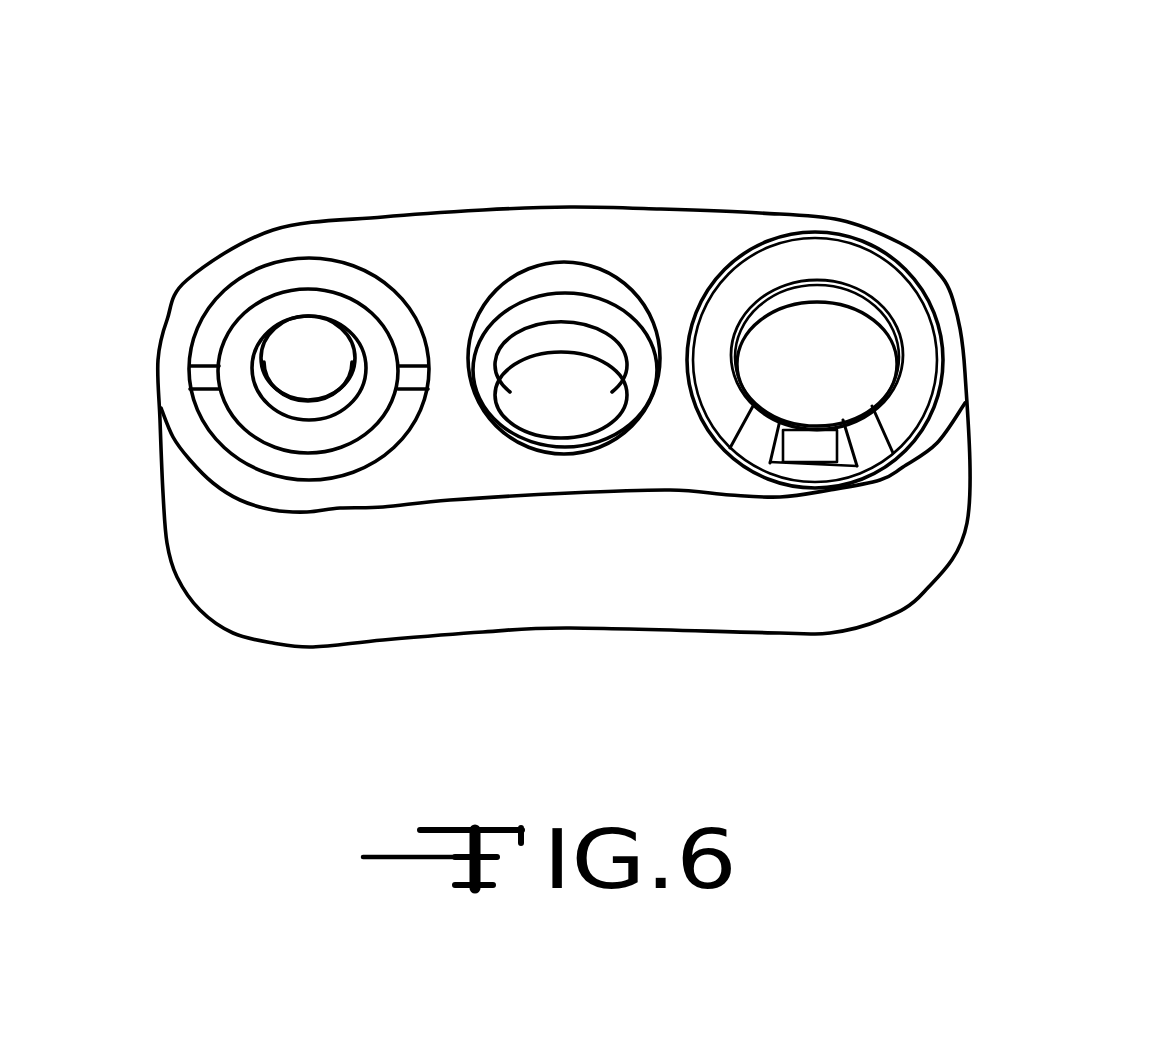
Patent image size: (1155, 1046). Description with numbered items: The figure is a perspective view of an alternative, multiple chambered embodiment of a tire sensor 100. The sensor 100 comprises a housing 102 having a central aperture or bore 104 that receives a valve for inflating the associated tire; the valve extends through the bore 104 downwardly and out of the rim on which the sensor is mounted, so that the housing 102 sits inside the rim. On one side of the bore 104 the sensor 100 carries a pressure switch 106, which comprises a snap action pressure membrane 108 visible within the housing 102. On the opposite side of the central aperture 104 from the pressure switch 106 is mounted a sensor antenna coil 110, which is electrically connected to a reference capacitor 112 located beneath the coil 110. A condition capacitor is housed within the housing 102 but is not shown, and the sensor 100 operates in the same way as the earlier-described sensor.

The sensor 100 is at (932, 638).
The housing 102 is at (967, 457).
The central aperture or bore 104 is at (541, 368).
The pressure switch 106 is at (383, 265).
The snap action pressure membrane 108 is at (314, 290).
The sensor antenna coil 110 is at (907, 303).
The reference capacitor 112 is at (770, 450).